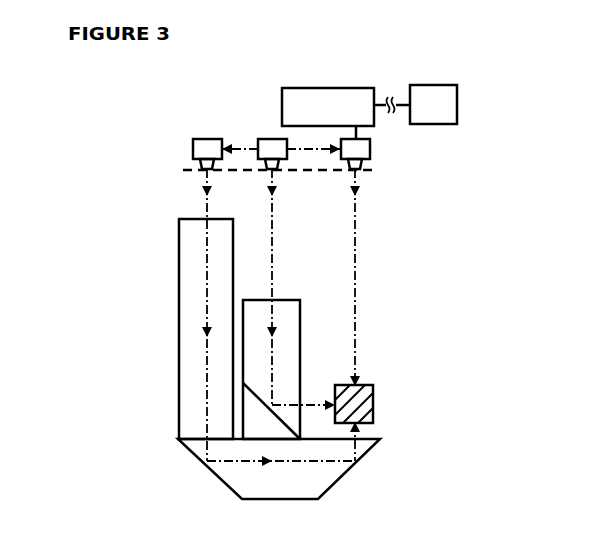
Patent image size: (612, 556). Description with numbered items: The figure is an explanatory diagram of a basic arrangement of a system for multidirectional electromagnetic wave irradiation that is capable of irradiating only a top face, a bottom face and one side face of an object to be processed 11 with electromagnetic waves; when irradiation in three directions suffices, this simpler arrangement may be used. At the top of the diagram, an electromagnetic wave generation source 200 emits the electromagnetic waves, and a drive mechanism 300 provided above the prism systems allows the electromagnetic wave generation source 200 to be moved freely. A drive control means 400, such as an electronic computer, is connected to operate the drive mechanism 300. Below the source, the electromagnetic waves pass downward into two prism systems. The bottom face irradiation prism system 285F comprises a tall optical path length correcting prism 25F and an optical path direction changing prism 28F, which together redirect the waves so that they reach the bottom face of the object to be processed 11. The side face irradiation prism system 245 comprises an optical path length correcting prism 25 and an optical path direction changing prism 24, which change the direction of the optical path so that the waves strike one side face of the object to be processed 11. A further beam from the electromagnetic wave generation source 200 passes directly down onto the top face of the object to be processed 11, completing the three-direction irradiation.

The electromagnetic wave generation source 200 is at (204, 139).
The drive mechanism 300 is at (344, 119).
The drive control means 400 is at (449, 119).
The optical path length correcting prism 25F is at (178, 386).
The bottom face irradiation prism system 285F is at (158, 302).
The optical path length correcting prism 25 is at (288, 300).
The optical path direction changing prism 24 is at (253, 429).
The side face irradiation prism system 245 is at (318, 346).
The object to be processed 11 is at (375, 393).
The optical path direction changing prism 28F is at (345, 483).